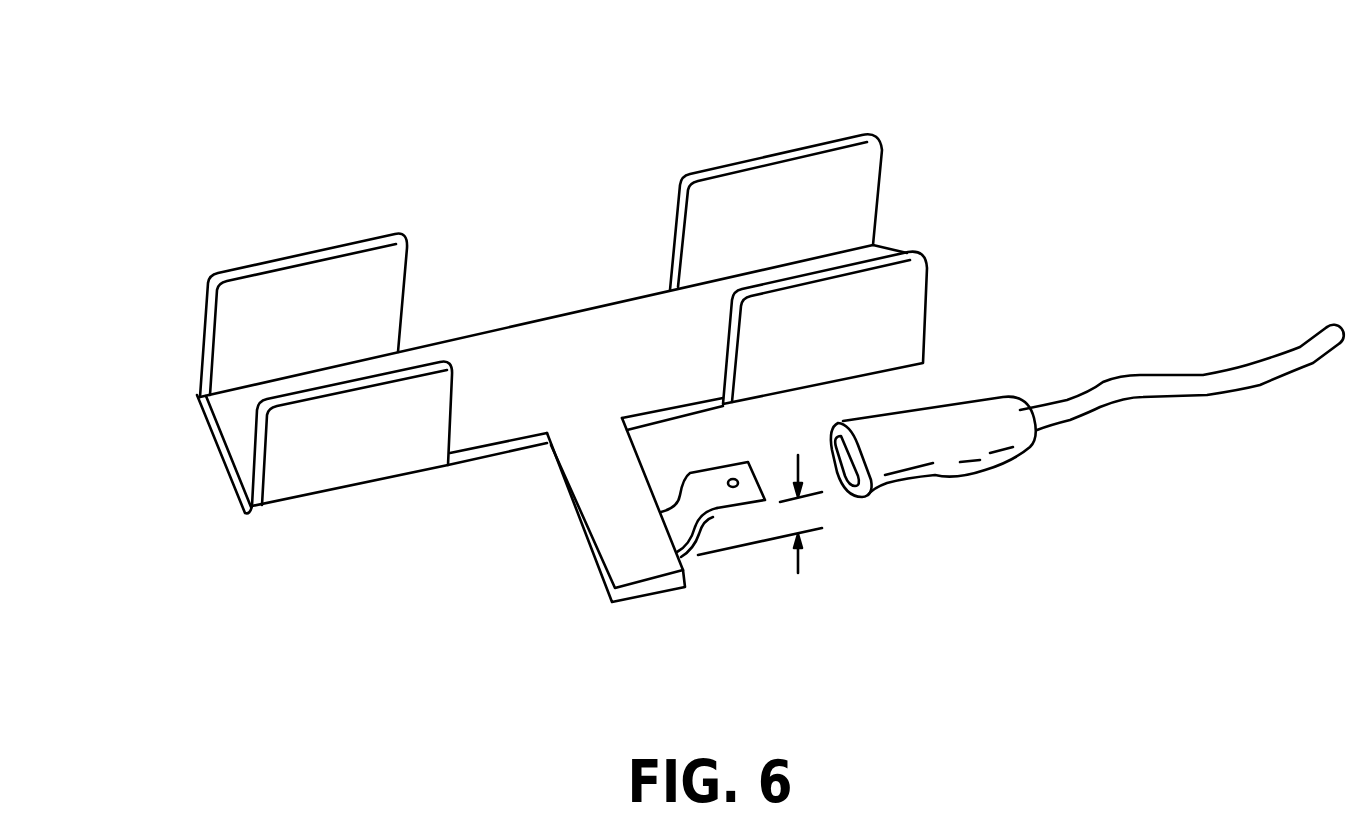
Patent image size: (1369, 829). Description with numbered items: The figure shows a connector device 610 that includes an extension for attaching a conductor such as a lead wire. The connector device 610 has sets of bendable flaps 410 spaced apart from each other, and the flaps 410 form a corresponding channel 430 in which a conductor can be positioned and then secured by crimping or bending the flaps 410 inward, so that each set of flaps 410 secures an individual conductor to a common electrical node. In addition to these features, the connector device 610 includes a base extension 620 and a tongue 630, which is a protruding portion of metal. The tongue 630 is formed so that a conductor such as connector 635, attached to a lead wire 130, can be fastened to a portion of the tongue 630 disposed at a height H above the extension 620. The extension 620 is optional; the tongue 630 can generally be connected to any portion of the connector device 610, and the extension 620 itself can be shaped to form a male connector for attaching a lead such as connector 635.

The lead wire 130 is at (1175, 387).
The bendable flaps 410 is at (318, 293).
The channel 430 is at (945, 238).
The connector device 610 is at (163, 584).
The base extension 620 is at (600, 502).
The tongue 630 is at (713, 487).
The connector 635 is at (950, 458).